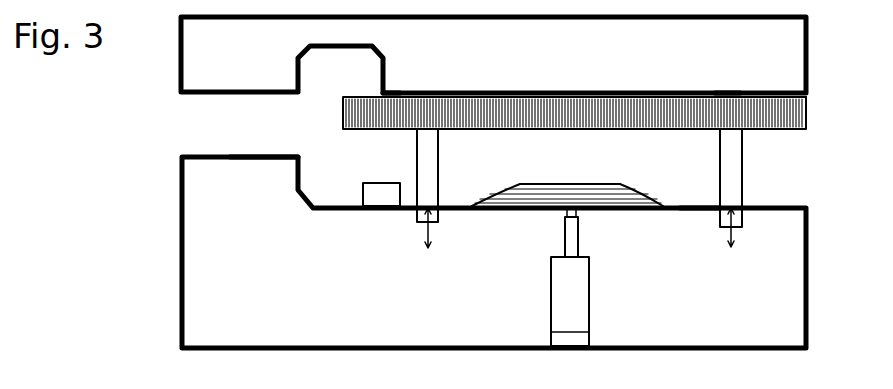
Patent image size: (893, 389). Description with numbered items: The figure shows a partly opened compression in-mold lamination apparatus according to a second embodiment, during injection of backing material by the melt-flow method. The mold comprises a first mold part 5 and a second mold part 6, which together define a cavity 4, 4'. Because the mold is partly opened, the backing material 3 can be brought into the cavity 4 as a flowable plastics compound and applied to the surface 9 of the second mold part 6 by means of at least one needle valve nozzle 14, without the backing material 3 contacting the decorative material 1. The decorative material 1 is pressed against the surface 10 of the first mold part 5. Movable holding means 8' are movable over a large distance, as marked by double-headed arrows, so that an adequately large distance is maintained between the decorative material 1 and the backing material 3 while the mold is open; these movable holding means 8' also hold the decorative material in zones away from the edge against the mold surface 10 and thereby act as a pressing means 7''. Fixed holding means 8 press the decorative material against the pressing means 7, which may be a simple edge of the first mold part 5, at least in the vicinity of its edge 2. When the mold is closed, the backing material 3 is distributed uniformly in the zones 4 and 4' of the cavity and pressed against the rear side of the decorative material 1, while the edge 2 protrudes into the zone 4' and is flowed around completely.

The decorative material 1 is at (533, 117).
The edge 2 is at (343, 115).
The backing material 3 is at (543, 193).
The cavity 4 is at (485, 147).
The cavity zone 4' is at (285, 146).
The first mold part 5 is at (267, 52).
The second mold part 6 is at (267, 264).
The pressing means 7 is at (442, 58).
The pressing means 7'' is at (714, 58).
The fixed holding means 8 is at (373, 225).
The movable holding means 8' is at (611, 188).
The surface 9 is at (701, 203).
The surface 10 is at (770, 100).
The needle valve nozzle 14 is at (570, 277).